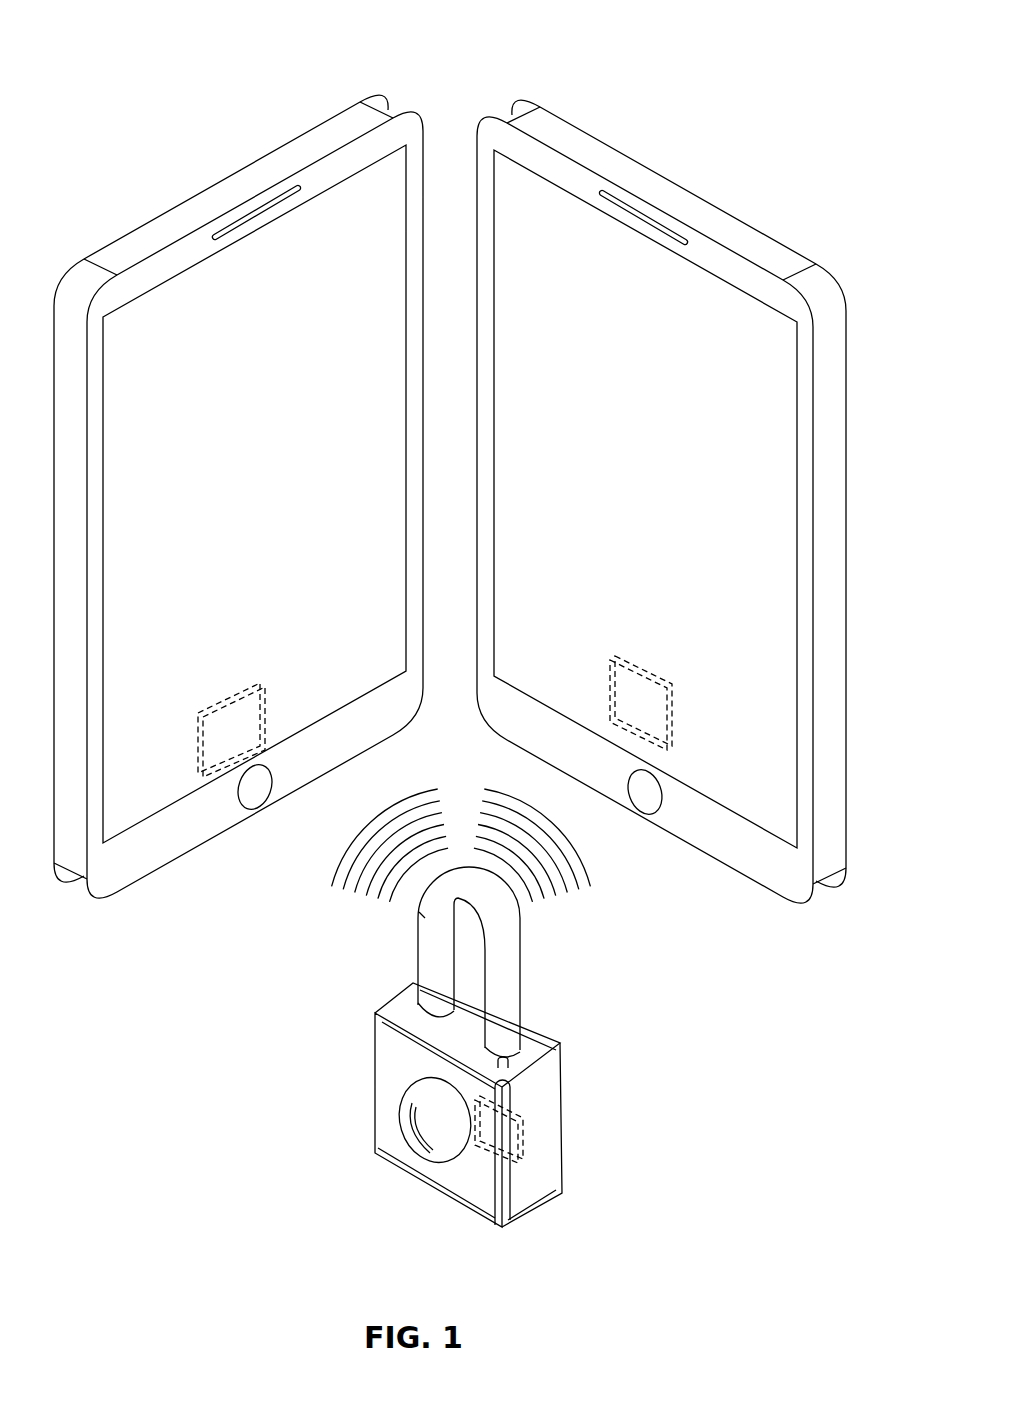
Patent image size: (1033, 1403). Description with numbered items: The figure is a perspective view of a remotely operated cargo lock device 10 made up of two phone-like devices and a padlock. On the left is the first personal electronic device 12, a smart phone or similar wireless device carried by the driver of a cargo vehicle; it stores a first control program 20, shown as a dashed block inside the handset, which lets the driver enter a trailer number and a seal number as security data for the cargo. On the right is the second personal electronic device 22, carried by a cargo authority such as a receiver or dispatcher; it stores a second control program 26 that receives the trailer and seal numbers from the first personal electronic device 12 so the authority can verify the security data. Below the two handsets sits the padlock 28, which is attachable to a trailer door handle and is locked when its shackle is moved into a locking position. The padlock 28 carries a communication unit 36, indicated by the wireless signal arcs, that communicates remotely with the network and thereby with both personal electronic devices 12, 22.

The remotely operated cargo lock device 10 is at (93, 166).
The first personal electronic device 12 is at (252, 167).
The first control program 20 is at (216, 753).
The second personal electronic device 22 is at (550, 112).
The second control program 26 is at (650, 720).
The padlock 28 is at (540, 1221).
The communication unit 36 is at (517, 1133).